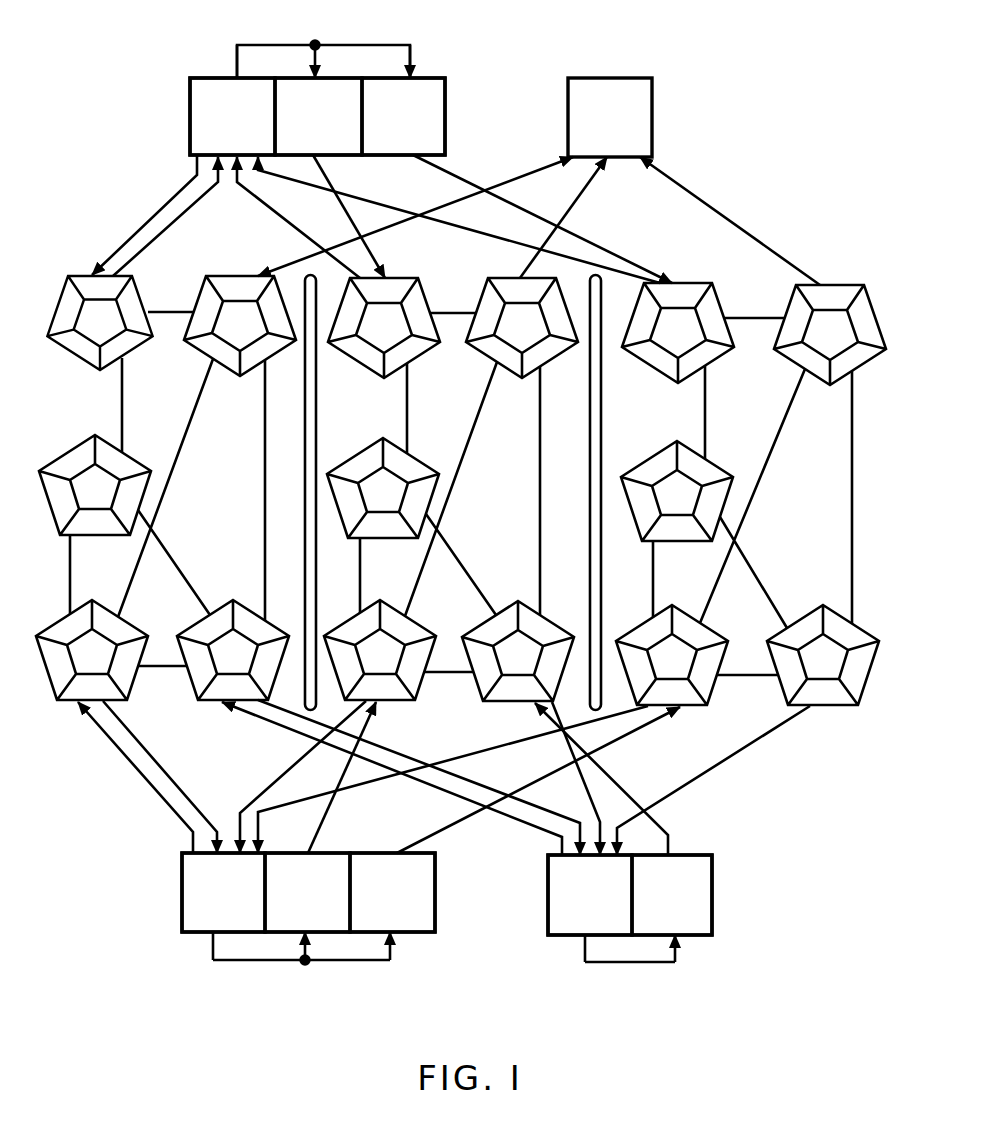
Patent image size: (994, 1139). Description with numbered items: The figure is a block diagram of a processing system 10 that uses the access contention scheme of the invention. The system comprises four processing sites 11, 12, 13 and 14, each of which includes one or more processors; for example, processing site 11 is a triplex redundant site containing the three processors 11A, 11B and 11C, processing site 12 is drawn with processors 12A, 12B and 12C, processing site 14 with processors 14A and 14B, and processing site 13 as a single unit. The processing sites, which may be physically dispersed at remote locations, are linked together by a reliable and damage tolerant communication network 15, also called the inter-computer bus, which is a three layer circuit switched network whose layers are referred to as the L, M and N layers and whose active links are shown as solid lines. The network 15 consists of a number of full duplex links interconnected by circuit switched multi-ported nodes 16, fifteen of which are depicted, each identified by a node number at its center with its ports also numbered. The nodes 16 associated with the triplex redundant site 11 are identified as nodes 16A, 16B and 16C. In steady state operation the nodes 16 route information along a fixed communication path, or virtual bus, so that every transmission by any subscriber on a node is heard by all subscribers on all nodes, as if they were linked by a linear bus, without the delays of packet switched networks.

The processing system 10 is at (746, 820).
The processing site 11 is at (158, 913).
The processor 11A is at (207, 904).
The processor 11B is at (292, 904).
The processor 11C is at (376, 904).
The processing site 12 is at (201, 70).
The processor 12A is at (215, 130).
The processor 12B is at (301, 130).
The processor 12C is at (386, 130).
The processing site 13 is at (669, 97).
The processing site 14 is at (740, 907).
The processor 14A is at (574, 906).
The processor 14B is at (656, 906).
The communication network 15 is at (771, 223).
The circuit switched multi-ported node 16 is at (140, 303).
The node 16A is at (143, 630).
The node 16B is at (427, 632).
The node 16C is at (725, 634).